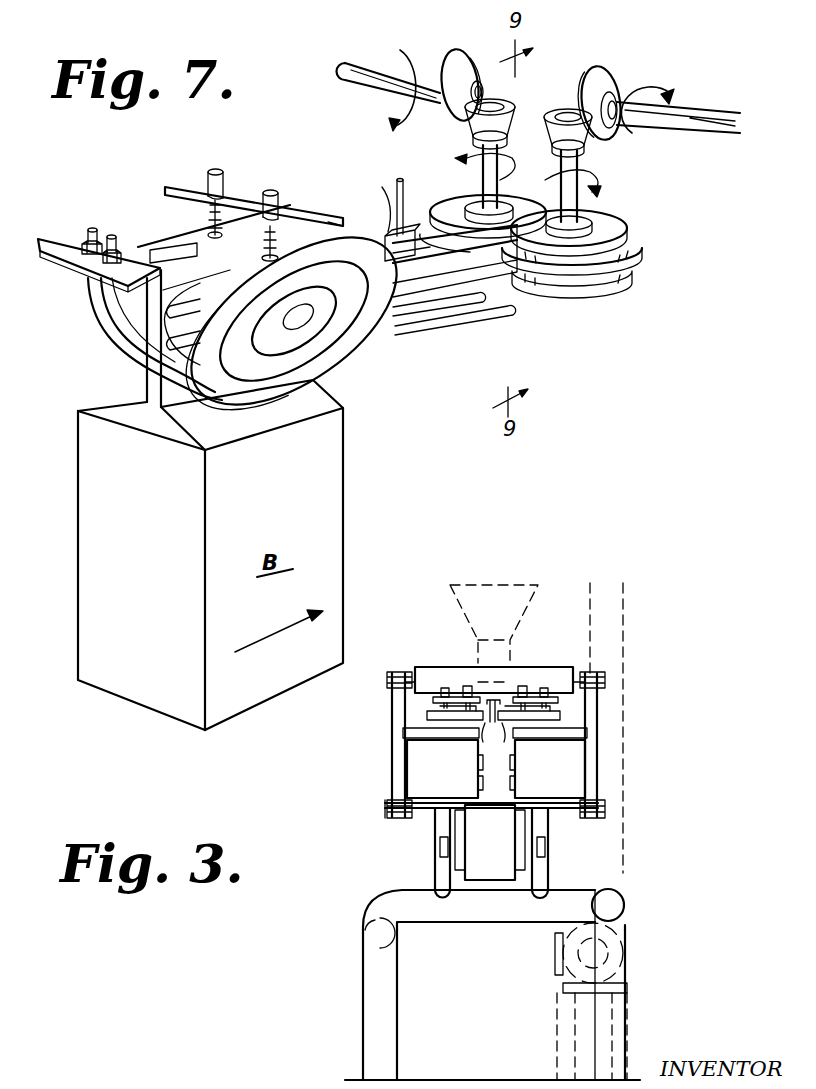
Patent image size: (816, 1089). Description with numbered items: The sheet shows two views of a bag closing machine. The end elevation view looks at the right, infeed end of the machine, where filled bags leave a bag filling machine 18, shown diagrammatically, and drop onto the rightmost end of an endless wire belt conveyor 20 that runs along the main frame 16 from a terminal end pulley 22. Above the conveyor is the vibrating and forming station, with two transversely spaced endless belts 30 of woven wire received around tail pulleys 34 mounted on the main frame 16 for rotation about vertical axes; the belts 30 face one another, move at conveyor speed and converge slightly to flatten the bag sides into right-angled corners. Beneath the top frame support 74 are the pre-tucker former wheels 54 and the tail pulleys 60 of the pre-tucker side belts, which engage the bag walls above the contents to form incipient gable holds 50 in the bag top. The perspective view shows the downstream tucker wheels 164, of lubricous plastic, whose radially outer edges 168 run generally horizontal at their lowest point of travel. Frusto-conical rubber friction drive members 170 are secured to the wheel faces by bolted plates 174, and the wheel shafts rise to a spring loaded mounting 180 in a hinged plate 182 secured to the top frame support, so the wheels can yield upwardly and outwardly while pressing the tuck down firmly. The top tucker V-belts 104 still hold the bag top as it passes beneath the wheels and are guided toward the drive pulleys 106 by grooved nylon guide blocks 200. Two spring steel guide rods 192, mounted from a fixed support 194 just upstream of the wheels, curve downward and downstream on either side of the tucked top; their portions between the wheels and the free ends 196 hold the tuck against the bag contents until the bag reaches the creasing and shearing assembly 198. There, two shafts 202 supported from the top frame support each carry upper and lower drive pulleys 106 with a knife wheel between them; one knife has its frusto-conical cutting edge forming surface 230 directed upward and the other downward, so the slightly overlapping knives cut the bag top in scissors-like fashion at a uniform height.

In FIG. 7, the fixed support 194 is at (73, 240).
In FIG. 7, the hinged plate 182 is at (241, 193).
In FIG. 7, the spring loaded mounting 180 is at (209, 219).
In FIG. 7, the radially outer edges 168 is at (292, 322).
In FIG. 7, the bolted plates 174 is at (293, 321).
In FIG. 7, the friction drive members 170 is at (248, 360).
In FIG. 7, the tucker wheels 164 is at (113, 338).
In FIG. 7, the spring steel guide rods 192 is at (158, 365).
In FIG. 7, the top tucker V-belts 104 is at (212, 302).
In FIG. 7, the nylon guide blocks 200 is at (390, 200).
In FIG. 7, the shafts 202 is at (500, 155).
In FIG. 7, the creasing and shearing assembly 198 is at (612, 191).
In FIG. 7, the drive pulleys 106 is at (614, 224).
In FIG. 7, the frusto-conical cutting edge forming surface 230 is at (625, 256).
In FIG. 7, the free ends 196 is at (473, 310).
In FIG. 3, the bag filling machine 18 is at (490, 592).
In FIG. 3, the top frame support 74 is at (437, 641).
In FIG. 3, the pre-tucker former wheels 54 is at (427, 718).
In FIG. 3, the tail pulleys 60 is at (560, 718).
In FIG. 3, the incipient gable holds 50 is at (498, 732).
In FIG. 3, the tail pulleys 34 is at (407, 738).
In FIG. 3, the endless belts 30 is at (460, 779).
In FIG. 3, the endless wire belt conveyor 20 is at (492, 842).
In FIG. 3, the main frame 16 is at (425, 810).
In FIG. 3, the terminal end pulley 22 is at (543, 876).